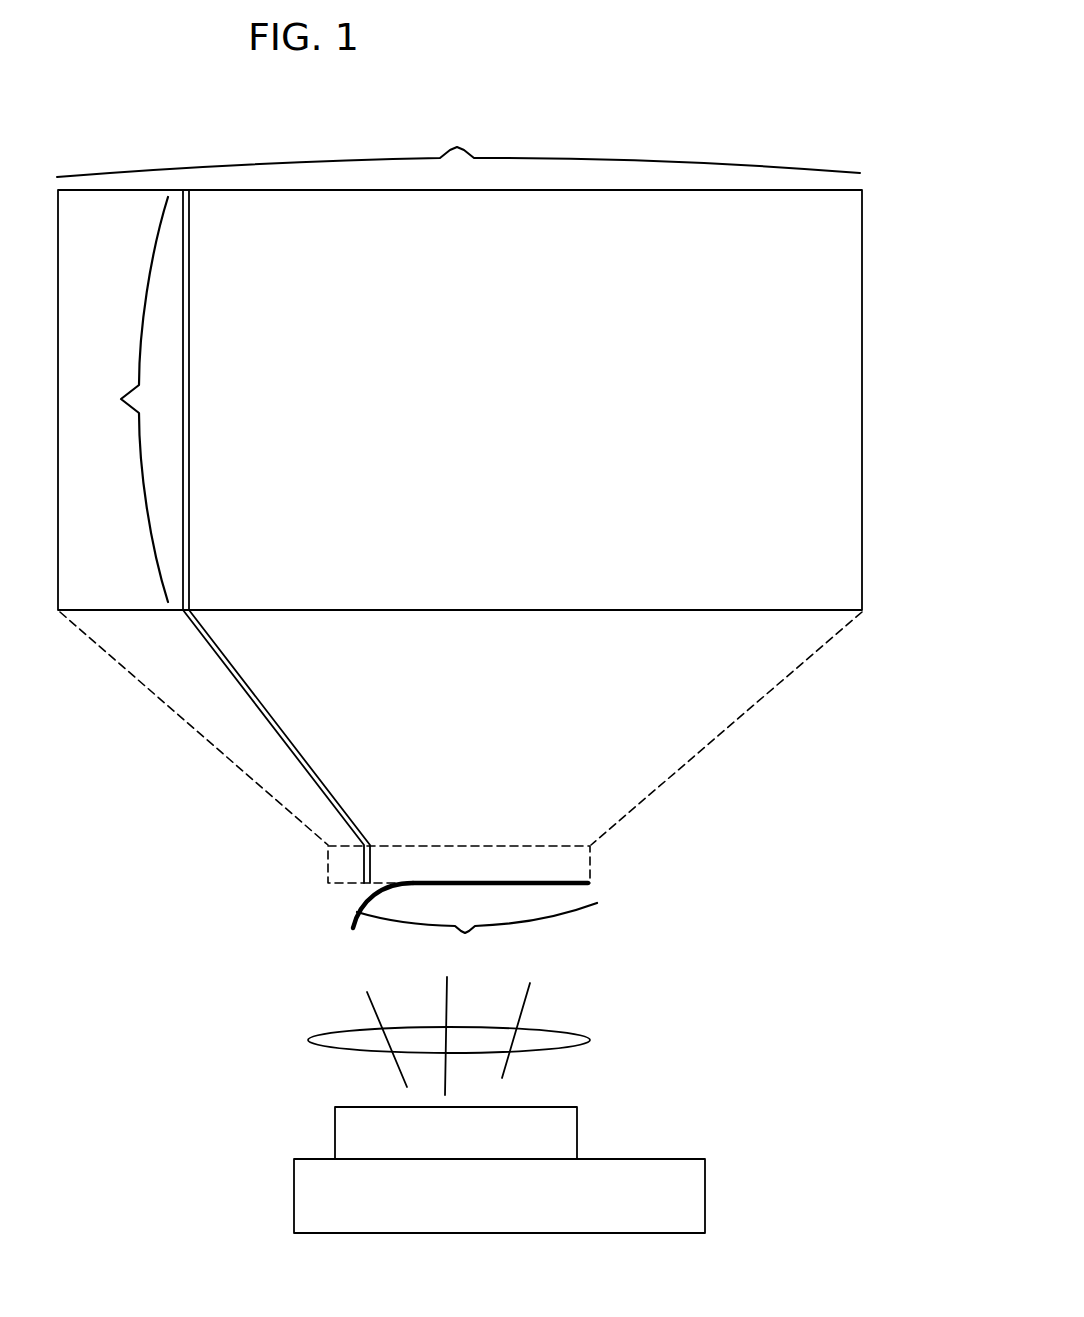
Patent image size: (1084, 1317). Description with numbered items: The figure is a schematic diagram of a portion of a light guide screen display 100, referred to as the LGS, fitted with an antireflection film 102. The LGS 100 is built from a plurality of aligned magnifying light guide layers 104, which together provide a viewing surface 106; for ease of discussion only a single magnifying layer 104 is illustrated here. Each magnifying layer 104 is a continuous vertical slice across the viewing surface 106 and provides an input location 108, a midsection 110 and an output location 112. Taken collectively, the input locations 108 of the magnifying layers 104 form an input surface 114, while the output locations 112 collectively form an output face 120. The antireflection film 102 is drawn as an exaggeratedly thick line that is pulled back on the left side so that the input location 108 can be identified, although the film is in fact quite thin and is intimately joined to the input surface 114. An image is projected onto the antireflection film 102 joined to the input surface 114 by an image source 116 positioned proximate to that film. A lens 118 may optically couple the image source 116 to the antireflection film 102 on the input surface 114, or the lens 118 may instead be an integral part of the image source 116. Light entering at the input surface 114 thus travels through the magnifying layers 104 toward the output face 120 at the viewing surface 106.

The light guide screen display 100 is at (768, 126).
The antireflection film 102 is at (587, 879).
The magnifying light guide layer 104 is at (193, 197).
The viewing surface 106 is at (838, 262).
The input location 108 is at (365, 887).
The midsection 110 is at (285, 732).
The output location 112 is at (122, 399).
The input surface 114 is at (477, 935).
The image source 116 is at (543, 1133).
The lens 118 is at (572, 1040).
The output face 120 is at (458, 142).